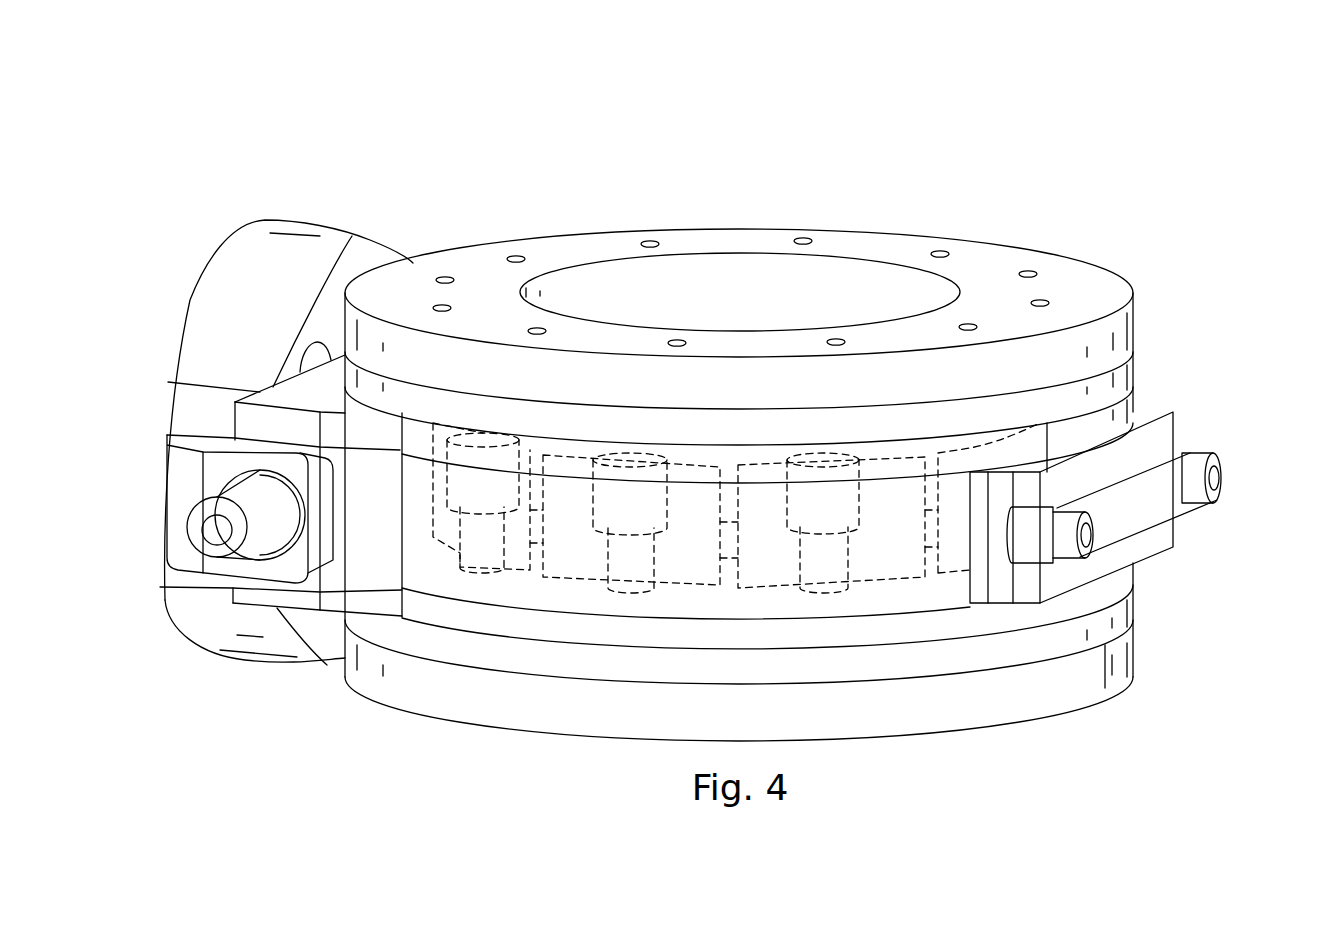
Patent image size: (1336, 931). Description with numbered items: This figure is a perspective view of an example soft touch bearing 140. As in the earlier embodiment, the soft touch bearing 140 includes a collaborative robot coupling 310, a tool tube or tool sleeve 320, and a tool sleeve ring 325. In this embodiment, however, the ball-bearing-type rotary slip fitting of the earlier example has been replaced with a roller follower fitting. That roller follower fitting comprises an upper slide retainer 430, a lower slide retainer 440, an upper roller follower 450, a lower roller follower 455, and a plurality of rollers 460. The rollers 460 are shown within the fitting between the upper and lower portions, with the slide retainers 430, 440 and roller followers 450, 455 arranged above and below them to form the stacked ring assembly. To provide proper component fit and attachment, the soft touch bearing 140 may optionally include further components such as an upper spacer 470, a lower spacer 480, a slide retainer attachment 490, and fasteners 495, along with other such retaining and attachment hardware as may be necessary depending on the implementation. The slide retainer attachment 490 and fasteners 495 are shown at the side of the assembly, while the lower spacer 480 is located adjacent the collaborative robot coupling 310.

The soft touch bearing 140 is at (484, 128).
The collaborative robot coupling 310 is at (323, 220).
The tool sleeve 320 is at (726, 272).
The tool sleeve ring 325 is at (1048, 262).
The upper slide retainer 430 is at (1135, 363).
The upper spacer 470 is at (1135, 400).
The lower slide retainer 440 is at (966, 727).
The lower roller follower 455 is at (1135, 612).
The upper roller follower 450 is at (625, 592).
The rollers 460 is at (477, 510).
The lower spacer 480 is at (233, 594).
The slide retainer attachment 490 is at (1165, 508).
The fasteners 495 is at (1222, 474).